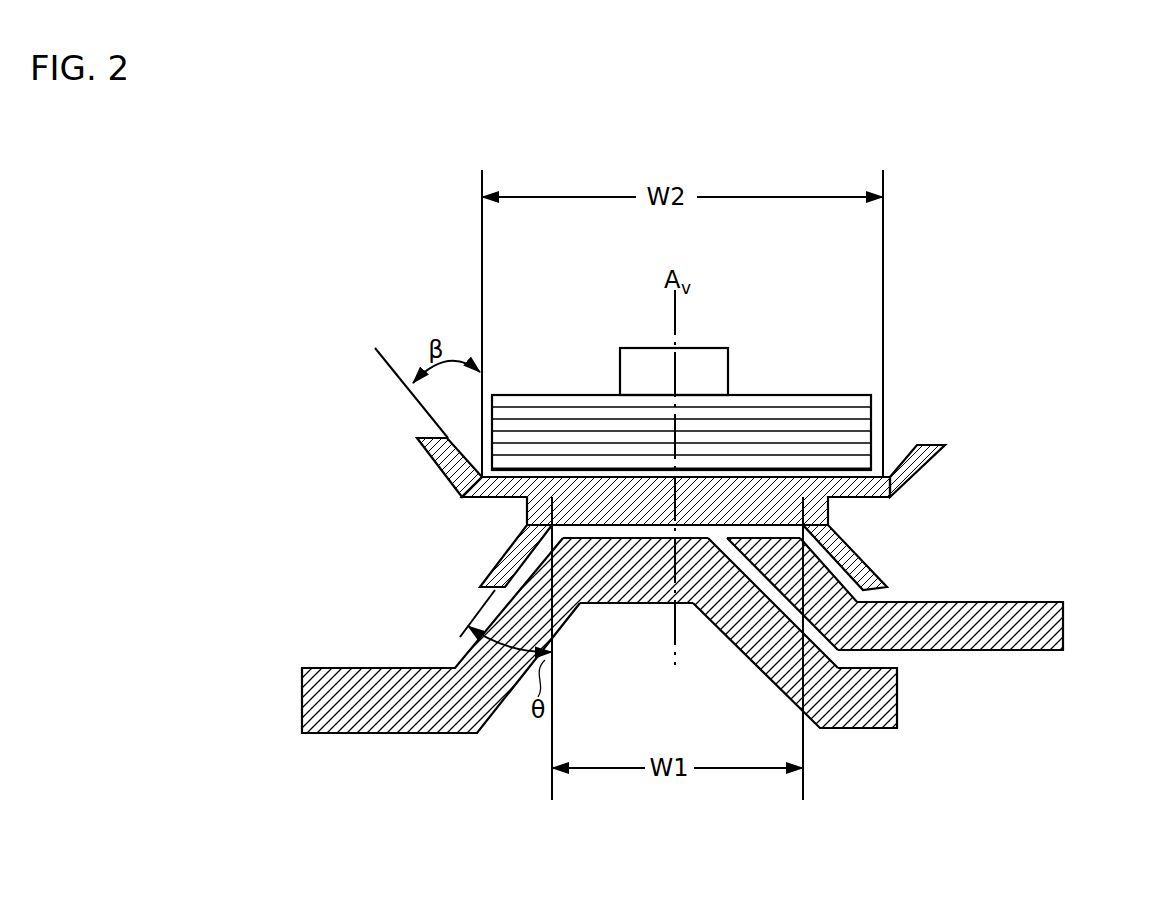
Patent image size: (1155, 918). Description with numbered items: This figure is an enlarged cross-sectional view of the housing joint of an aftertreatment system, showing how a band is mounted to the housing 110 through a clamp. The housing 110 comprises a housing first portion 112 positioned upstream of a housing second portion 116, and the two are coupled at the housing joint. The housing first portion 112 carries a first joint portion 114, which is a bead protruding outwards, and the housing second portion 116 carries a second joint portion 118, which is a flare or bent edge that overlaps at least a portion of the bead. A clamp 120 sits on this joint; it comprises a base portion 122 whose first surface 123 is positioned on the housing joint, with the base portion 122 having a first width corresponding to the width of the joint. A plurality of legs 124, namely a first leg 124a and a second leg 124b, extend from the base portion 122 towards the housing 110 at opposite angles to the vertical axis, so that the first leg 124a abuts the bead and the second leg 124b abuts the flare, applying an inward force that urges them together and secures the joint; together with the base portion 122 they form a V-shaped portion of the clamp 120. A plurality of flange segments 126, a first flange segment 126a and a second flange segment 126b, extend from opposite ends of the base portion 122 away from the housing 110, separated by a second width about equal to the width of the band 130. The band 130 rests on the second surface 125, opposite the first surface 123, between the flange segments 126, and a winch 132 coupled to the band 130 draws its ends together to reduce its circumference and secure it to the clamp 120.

The housing 110 is at (1027, 562).
The housing first portion 112 is at (362, 707).
The first joint portion 114 is at (617, 590).
The housing second portion 116 is at (957, 618).
The second joint portion 118 is at (807, 590).
The clamp 120 is at (930, 408).
The base portion 122 is at (567, 490).
The first surface 123 is at (735, 530).
The plurality of legs 124 is at (375, 576).
The first leg 124a is at (513, 558).
The second leg 124b is at (858, 573).
The second surface 125 is at (752, 470).
The plurality of flange segments 126 is at (378, 420).
The first flange segment 126a is at (443, 477).
The second flange segment 126b is at (903, 478).
The band 130 is at (553, 403).
The winch 132 is at (638, 347).